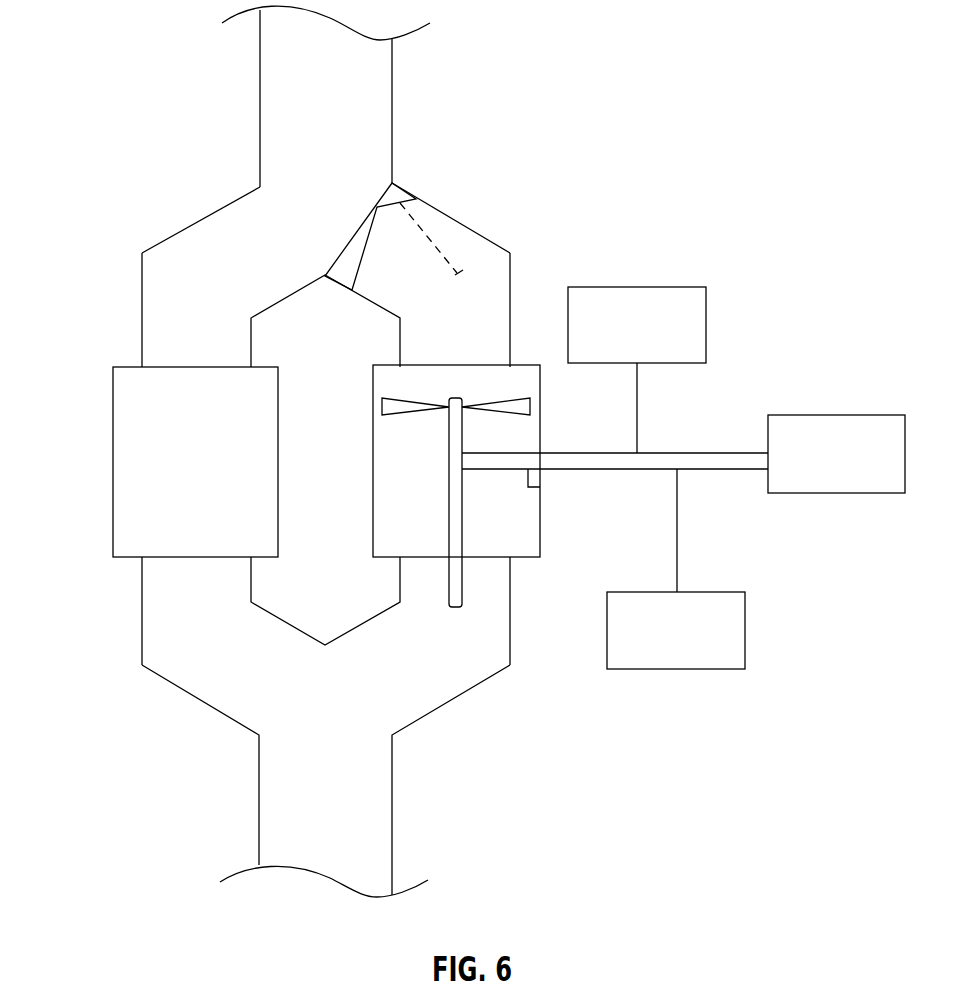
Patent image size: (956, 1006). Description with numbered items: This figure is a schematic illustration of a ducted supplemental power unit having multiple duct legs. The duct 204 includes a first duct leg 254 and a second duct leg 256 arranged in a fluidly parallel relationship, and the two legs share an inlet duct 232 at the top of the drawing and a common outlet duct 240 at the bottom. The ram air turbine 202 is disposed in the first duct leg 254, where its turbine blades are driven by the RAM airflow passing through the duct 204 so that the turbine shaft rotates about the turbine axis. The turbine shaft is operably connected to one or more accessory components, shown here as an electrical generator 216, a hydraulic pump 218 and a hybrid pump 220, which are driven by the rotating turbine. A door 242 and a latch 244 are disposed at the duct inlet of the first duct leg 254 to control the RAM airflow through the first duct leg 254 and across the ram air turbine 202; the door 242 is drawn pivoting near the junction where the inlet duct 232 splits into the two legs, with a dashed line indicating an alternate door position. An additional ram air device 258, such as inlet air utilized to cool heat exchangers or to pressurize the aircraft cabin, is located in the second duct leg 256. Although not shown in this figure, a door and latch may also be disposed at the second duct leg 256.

The ram air turbine 202 is at (492, 287).
The duct 204 is at (196, 182).
The electrical generator 216 is at (833, 413).
The hydraulic pump 218 is at (635, 286).
The hybrid pump 220 is at (687, 590).
The inlet duct 232 is at (273, 105).
The outlet duct 240 is at (272, 807).
The door 242 is at (377, 207).
The latch 244 is at (343, 270).
The first duct leg 254 is at (447, 307).
The second duct leg 256 is at (155, 312).
The additional ram air device 258 is at (127, 457).